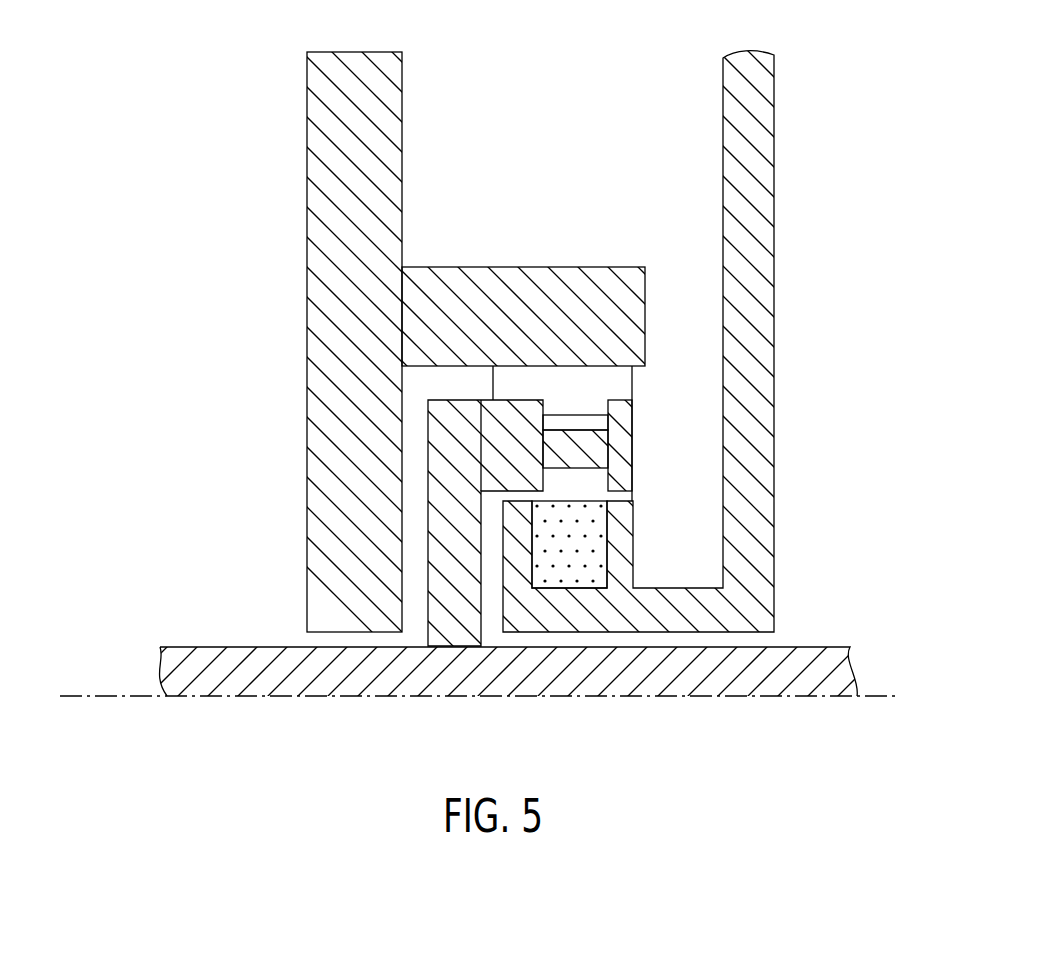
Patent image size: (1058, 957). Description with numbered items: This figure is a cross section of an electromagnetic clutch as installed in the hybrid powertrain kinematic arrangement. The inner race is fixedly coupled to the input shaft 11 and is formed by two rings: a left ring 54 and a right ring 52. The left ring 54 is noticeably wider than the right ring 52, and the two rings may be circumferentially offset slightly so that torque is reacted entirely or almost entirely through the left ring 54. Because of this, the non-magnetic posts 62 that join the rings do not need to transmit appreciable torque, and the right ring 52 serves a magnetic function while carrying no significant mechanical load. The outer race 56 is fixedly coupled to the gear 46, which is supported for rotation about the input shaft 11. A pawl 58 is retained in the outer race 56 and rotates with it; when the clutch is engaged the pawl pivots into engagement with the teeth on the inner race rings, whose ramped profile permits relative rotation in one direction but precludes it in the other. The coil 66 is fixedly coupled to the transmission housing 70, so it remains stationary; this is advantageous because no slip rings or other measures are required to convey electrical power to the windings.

The input shaft 11 is at (233, 652).
The gear 46 is at (315, 152).
The right ring 52 is at (633, 455).
The left ring 54 is at (487, 447).
The outer race 56 is at (527, 273).
The pawl 58 is at (634, 376).
The non-magnetic post 62 is at (573, 430).
The coil 66 is at (633, 544).
The transmission housing 70 is at (735, 106).